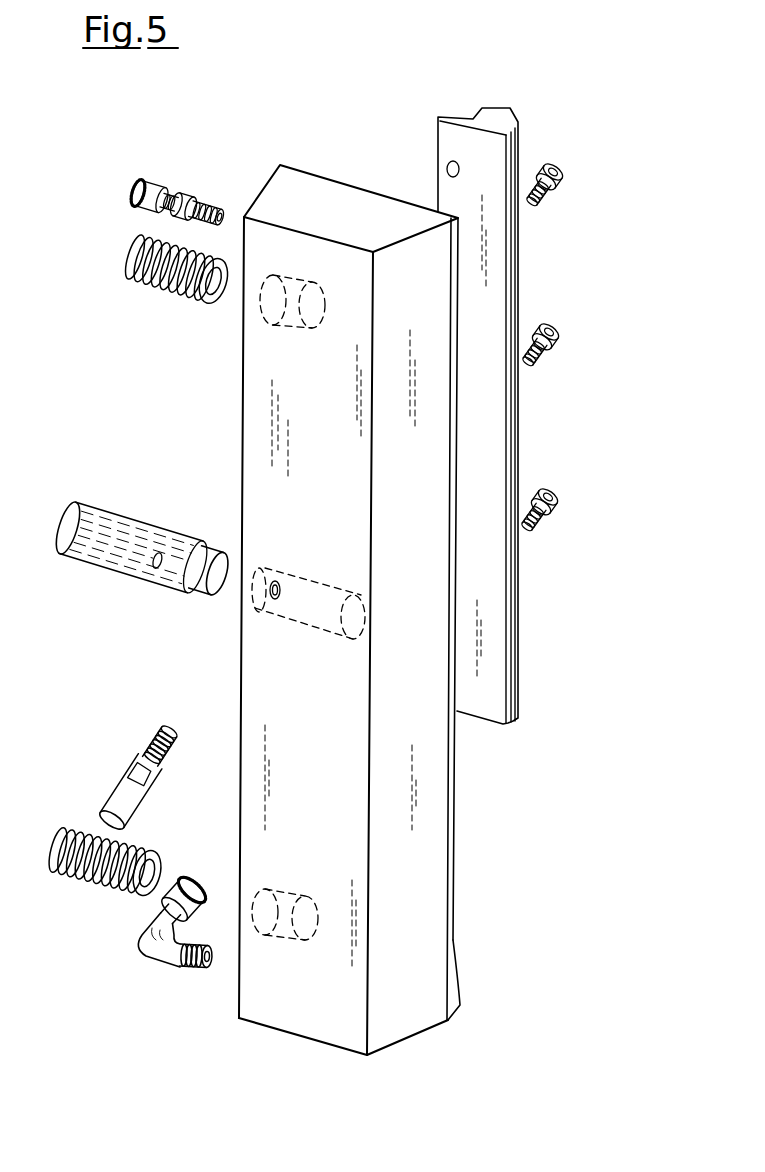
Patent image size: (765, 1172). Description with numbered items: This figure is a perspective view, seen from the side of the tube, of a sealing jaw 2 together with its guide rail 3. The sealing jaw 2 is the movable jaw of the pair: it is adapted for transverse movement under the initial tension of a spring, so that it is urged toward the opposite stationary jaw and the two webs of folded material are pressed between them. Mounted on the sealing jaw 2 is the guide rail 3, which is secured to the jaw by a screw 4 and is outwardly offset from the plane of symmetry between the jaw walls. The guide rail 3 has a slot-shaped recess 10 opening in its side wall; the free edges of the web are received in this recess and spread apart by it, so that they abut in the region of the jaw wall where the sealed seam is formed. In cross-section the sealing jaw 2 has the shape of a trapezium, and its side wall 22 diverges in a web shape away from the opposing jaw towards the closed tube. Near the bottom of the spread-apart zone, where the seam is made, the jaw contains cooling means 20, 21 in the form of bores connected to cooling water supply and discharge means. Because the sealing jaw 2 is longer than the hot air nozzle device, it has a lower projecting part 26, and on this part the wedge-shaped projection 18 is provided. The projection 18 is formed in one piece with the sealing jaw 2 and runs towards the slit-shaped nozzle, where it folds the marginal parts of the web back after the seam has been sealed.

The sealing jaw 2 is at (317, 773).
The guide rail 3 is at (497, 125).
The screw 4 is at (560, 336).
The slot-shaped recess 10 is at (520, 152).
The wedge-shaped projection 18 is at (452, 997).
The cooling means 20 is at (218, 208).
The cooling means 21 is at (192, 967).
The side wall 22 is at (418, 880).
The lower projecting part 26 is at (398, 1003).